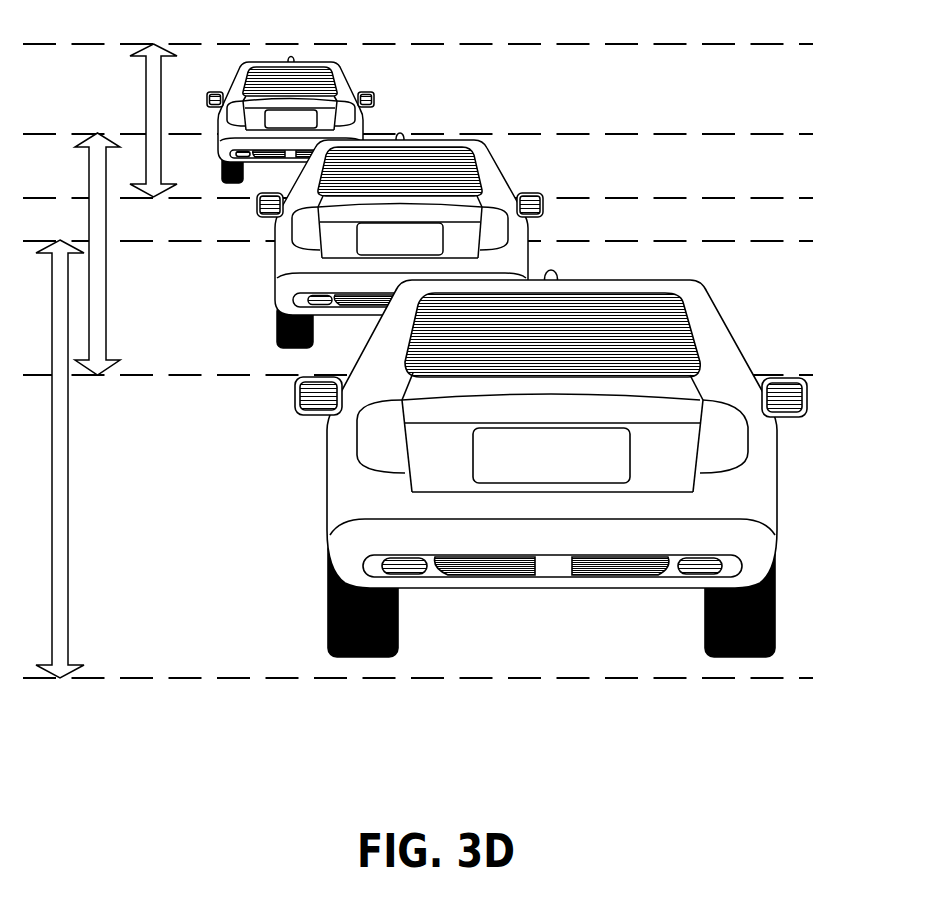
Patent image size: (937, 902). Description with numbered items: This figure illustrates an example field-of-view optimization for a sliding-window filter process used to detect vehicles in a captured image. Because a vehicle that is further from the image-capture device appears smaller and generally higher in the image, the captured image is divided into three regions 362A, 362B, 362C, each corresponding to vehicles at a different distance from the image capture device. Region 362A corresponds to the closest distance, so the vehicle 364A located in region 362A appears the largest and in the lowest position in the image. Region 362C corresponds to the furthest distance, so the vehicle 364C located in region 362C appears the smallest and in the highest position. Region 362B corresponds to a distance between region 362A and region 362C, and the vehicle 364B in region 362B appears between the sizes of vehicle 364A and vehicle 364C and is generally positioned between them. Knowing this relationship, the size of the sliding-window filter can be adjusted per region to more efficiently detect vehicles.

The region 362A is at (68, 592).
The region 362B is at (106, 326).
The region 362C is at (146, 90).
The vehicle 364A is at (327, 490).
The vehicle 364B is at (275, 273).
The vehicle 364C is at (375, 100).